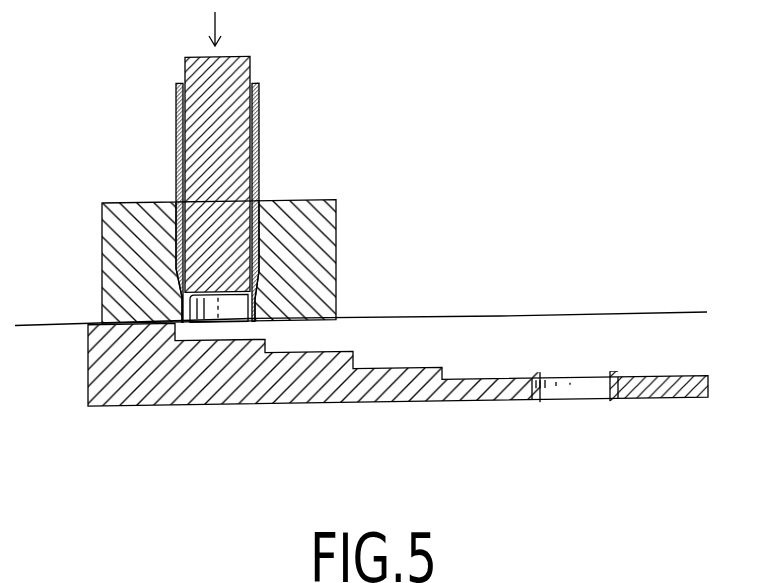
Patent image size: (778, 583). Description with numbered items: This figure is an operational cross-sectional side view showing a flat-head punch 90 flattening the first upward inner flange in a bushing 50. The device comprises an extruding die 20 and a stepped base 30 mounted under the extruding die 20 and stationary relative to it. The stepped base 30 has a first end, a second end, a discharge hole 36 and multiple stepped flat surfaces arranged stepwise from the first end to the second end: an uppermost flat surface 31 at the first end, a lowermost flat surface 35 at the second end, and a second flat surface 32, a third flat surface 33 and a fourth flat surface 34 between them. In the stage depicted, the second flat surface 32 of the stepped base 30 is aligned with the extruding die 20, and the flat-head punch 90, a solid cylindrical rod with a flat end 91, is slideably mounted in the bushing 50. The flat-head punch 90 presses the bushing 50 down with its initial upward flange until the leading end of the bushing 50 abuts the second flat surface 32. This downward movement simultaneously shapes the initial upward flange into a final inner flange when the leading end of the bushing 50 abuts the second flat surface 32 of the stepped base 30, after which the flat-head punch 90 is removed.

The extruding die 20 is at (287, 212).
The stepped base 30 is at (100, 387).
The uppermost flat surface 31 is at (149, 343).
The second flat surface 32 is at (240, 343).
The third flat surface 33 is at (313, 363).
The fourth flat surface 34 is at (407, 370).
The lowermost flat surface 35 is at (500, 385).
The discharge hole 36 is at (617, 385).
The bushing 50 is at (178, 163).
The flat-head punch 90 is at (208, 80).
The flat end 91 is at (218, 293).